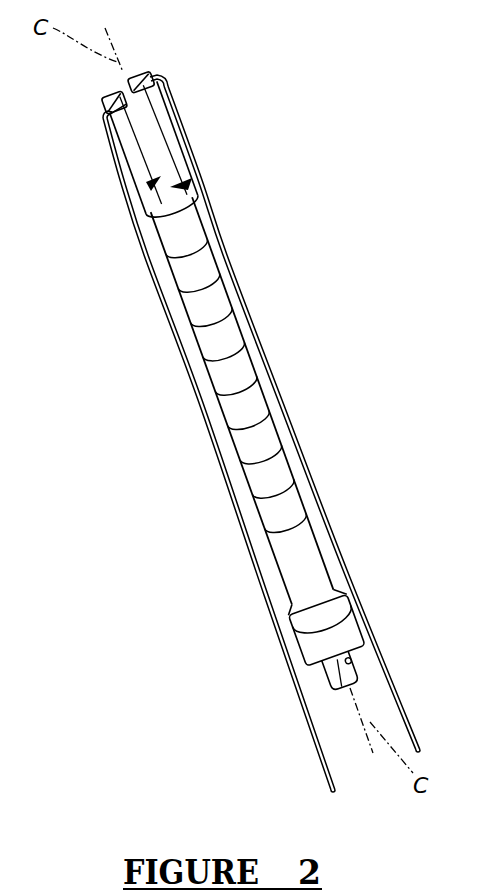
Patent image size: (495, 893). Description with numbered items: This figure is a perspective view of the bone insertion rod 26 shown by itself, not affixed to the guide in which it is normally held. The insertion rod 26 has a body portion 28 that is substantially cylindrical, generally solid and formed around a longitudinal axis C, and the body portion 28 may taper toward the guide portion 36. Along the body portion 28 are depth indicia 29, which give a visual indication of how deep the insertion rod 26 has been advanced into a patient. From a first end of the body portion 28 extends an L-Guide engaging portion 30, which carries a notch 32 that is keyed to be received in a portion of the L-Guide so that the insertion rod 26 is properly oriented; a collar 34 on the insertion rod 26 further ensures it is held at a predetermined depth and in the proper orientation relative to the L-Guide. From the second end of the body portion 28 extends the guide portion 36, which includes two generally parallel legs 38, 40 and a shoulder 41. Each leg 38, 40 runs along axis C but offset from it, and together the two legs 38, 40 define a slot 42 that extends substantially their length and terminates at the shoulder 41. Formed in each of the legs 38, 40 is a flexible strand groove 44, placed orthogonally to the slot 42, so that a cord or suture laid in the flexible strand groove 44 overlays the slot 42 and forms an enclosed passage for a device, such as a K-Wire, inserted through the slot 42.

The insertion rod 26 is at (264, 357).
The body portion 28 is at (275, 470).
The depth indicia 29 is at (215, 318).
The L-Guide engaging portion 30 is at (339, 675).
The notch 32 is at (352, 660).
The collar 34 is at (336, 635).
The guide portion 36 is at (149, 186).
The leg 38 is at (137, 76).
The leg 40 is at (103, 98).
The shoulder 41 is at (193, 190).
The slot 42 is at (153, 138).
The flexible strand groove 44 is at (104, 113).